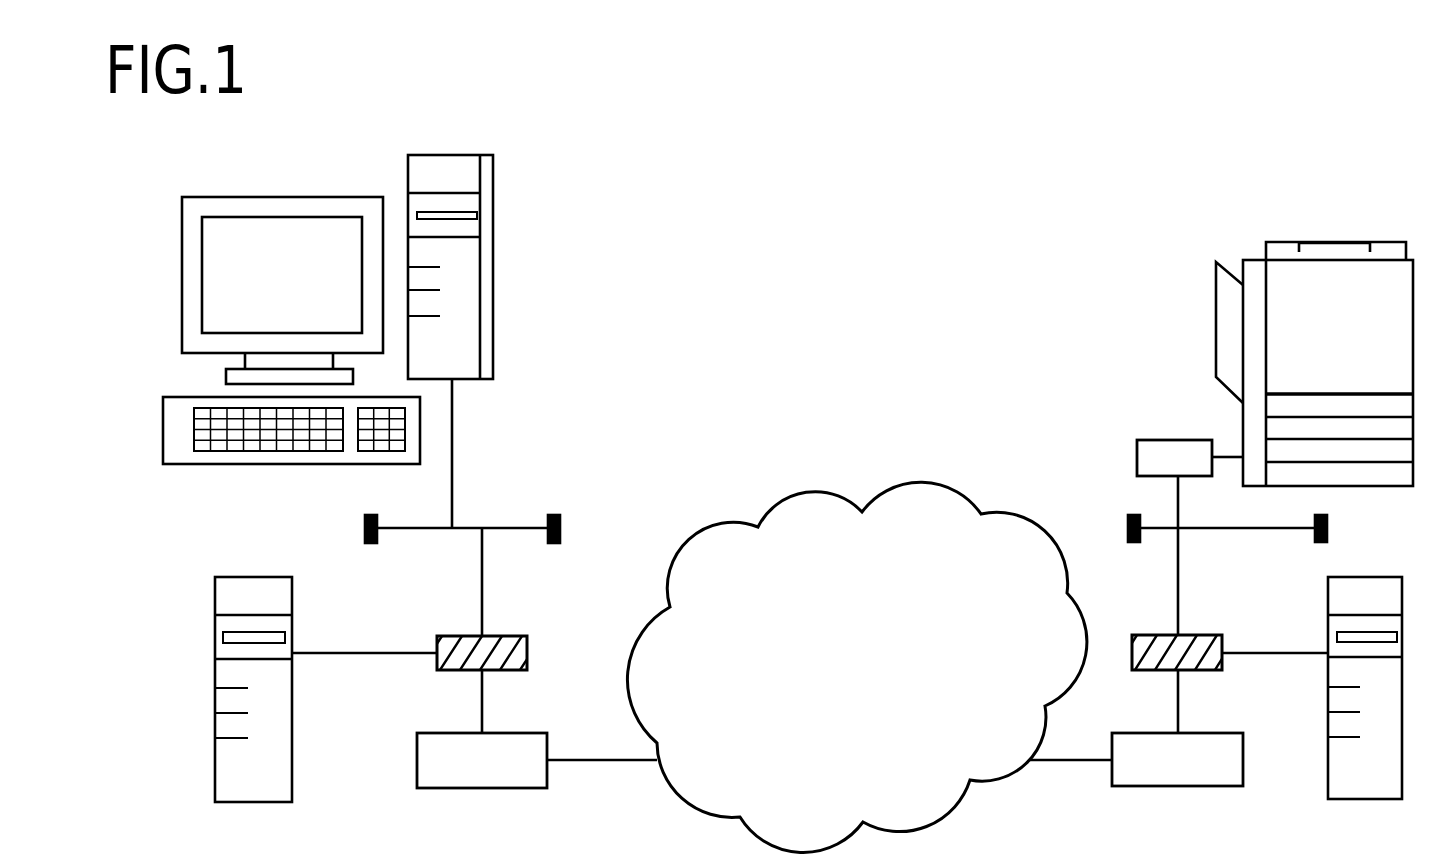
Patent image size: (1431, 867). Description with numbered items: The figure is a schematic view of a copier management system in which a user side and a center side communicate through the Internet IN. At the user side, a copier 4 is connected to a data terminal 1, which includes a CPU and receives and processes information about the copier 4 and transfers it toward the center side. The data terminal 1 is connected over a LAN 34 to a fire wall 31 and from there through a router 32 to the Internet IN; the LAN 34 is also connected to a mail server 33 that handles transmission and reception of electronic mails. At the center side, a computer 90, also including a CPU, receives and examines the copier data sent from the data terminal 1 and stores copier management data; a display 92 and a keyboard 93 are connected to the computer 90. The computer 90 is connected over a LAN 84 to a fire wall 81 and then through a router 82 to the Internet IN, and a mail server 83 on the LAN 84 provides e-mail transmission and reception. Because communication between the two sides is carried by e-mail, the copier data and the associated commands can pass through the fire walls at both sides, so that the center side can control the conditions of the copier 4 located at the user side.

The display 92 is at (317, 207).
The computer 90 is at (490, 272).
The keyboard 93 is at (213, 457).
The LAN 84 is at (498, 528).
The fire wall 81 is at (493, 642).
The router 82 is at (432, 735).
The mail server 83 is at (227, 697).
The Internet IN is at (816, 514).
The copier 4 is at (1290, 312).
The data terminal 1 is at (1200, 447).
The LAN 34 is at (1228, 530).
The fire wall 31 is at (1193, 643).
The router 32 is at (1243, 772).
The mail server 33 is at (1373, 588).